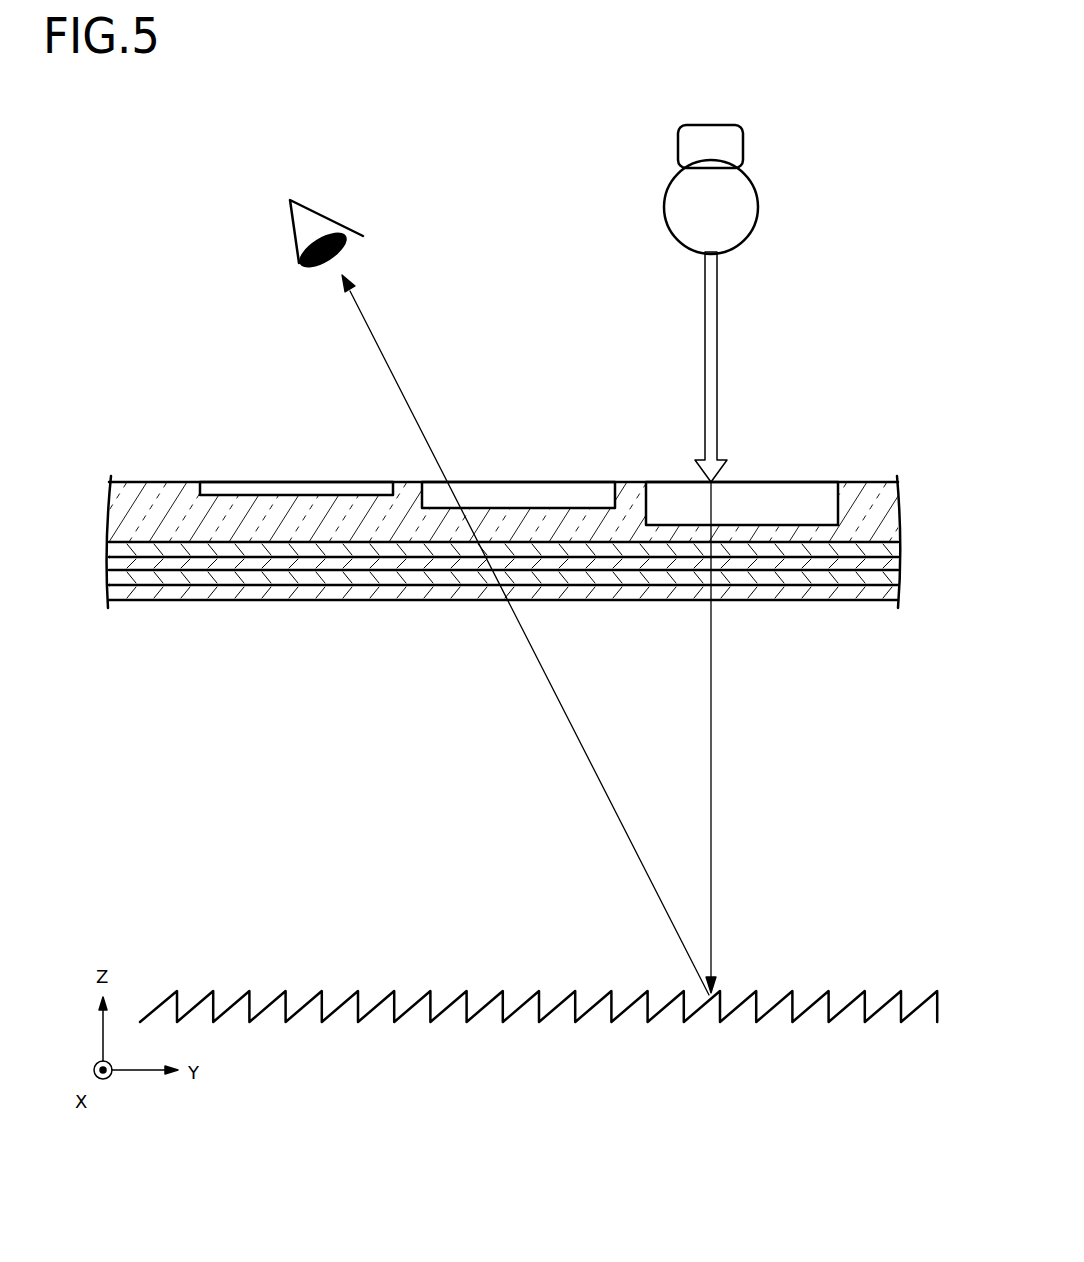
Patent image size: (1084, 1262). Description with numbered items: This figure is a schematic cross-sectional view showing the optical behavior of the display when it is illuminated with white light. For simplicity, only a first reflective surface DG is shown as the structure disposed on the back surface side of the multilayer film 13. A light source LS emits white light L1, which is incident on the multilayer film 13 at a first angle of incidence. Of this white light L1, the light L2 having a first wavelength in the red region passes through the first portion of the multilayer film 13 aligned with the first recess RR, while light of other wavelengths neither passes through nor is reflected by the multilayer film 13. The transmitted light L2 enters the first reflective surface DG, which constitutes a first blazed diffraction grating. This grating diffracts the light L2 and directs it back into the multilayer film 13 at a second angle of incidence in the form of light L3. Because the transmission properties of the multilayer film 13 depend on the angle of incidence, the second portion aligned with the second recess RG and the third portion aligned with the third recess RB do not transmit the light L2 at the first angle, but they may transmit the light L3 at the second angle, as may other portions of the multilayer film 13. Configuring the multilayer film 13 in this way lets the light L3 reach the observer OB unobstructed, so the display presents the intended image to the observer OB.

The multilayer film 13 is at (917, 482).
The third recess RB is at (298, 493).
The second recess RG is at (518, 500).
The first recess RR is at (809, 500).
The light source LS is at (663, 200).
The white light L1 is at (705, 357).
The light having a first wavelength L2 is at (712, 757).
The light L3 is at (588, 760).
The observer OB is at (313, 213).
The first reflective surface DG is at (853, 995).